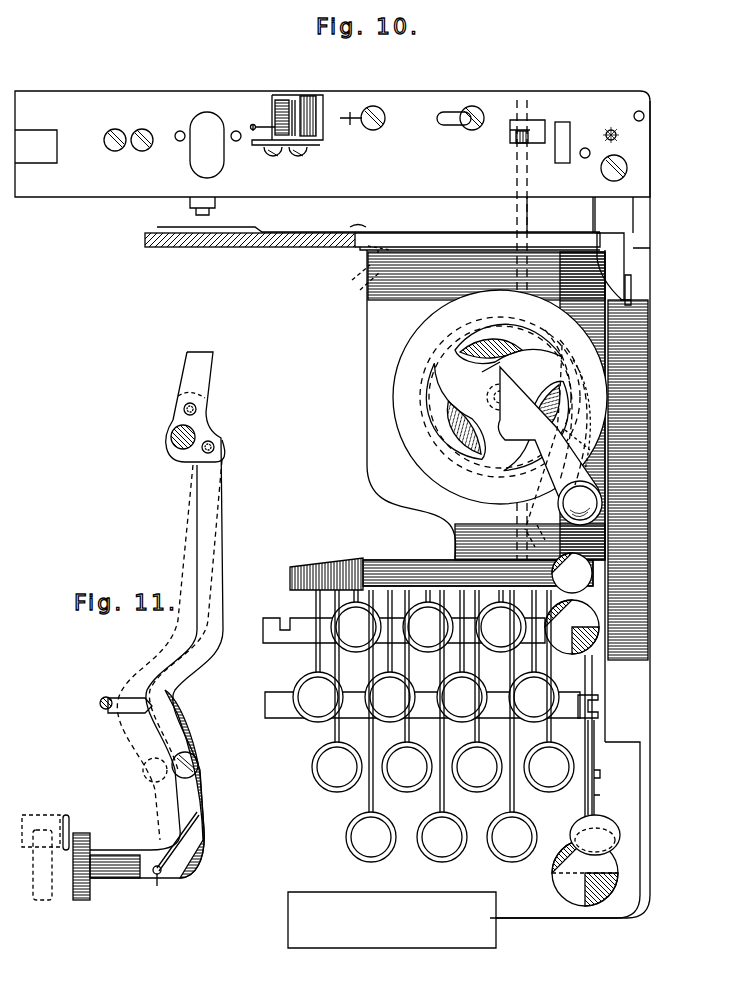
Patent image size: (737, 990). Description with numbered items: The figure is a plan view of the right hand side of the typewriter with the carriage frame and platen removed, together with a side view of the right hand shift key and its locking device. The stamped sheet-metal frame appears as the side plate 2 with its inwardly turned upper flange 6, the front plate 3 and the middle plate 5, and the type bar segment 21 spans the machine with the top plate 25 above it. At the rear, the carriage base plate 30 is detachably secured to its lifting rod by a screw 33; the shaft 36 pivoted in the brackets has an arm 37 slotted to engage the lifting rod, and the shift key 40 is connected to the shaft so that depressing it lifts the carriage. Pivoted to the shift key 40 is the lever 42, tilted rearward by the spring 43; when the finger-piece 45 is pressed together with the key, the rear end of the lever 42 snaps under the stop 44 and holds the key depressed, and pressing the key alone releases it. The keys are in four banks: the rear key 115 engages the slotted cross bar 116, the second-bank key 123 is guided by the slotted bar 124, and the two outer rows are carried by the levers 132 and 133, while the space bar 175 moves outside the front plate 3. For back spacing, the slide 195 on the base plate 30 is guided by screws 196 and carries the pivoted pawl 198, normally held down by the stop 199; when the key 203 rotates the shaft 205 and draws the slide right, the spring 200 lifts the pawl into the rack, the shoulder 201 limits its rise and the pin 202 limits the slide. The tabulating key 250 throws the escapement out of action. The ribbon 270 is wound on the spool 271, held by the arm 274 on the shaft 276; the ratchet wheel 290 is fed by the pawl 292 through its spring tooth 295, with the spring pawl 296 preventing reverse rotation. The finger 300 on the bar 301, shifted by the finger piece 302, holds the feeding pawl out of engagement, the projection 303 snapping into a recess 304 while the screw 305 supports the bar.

In FIG. 10, the side plate 2 is at (652, 230).
In FIG. 10, the front plate 3 is at (542, 918).
In FIG. 10, the middle plate 5 is at (290, 577).
In FIG. 10, the flange 6 is at (630, 348).
In FIG. 10, the type bar segment 21 is at (272, 250).
In FIG. 10, the top plate 25 is at (425, 492).
In FIG. 10, the base plate 30 is at (632, 133).
In FIG. 10, the screw 33 is at (628, 170).
In FIG. 11, the shaft 36 is at (172, 445).
In FIG. 11, the arm 37 is at (205, 375).
In FIG. 10, the shift key 40 is at (594, 668).
In FIG. 11, the shift key 40 is at (210, 528).
In FIG. 10, the lever 42 is at (596, 740).
In FIG. 11, the lever 42 is at (160, 722).
In FIG. 10, the spring 43 is at (596, 808).
In FIG. 11, the spring 43 is at (180, 838).
In FIG. 11, the stop 44 is at (100, 706).
In FIG. 10, the finger-piece 45 is at (620, 833).
In FIG. 11, the finger-piece 45 is at (63, 828).
In FIG. 10, the key 115 is at (330, 650).
In FIG. 10, the slotted cross bar 116 is at (278, 640).
In FIG. 10, the key 123 is at (308, 712).
In FIG. 10, the slotted bar 124 is at (600, 706).
In FIG. 10, the lever 132 is at (318, 785).
In FIG. 10, the lever 133 is at (347, 848).
In FIG. 10, the space bar 175 is at (380, 948).
In FIG. 10, the slide 195 is at (460, 108).
In FIG. 10, the screw 196 is at (395, 108).
In FIG. 10, the pawl 198 is at (305, 95).
In FIG. 10, the stop 199 is at (258, 150).
In FIG. 10, the spring 200 is at (262, 118).
In FIG. 10, the shoulder 201 is at (277, 98).
In FIG. 10, the pin 202 is at (372, 103).
In FIG. 10, the key 203 is at (595, 576).
In FIG. 10, the shaft 205 is at (528, 215).
In FIG. 10, the key 250 is at (598, 635).
In FIG. 10, the ribbon 270 is at (470, 345).
In FIG. 10, the spool 271 is at (405, 402).
In FIG. 10, the arm 274 is at (470, 420).
In FIG. 10, the shaft 276 is at (600, 512).
In FIG. 10, the ratchet wheel 290 is at (590, 405).
In FIG. 10, the pawl 292 is at (598, 217).
In FIG. 10, the spring tooth 295 is at (600, 380).
In FIG. 10, the spring pawl 296 is at (580, 425).
In FIG. 10, the finger 300 is at (575, 335).
In FIG. 10, the bar 301 is at (470, 222).
In FIG. 10, the finger piece 302 is at (634, 290).
In FIG. 10, the projection 303 is at (393, 233).
In FIG. 10, the recess 304 is at (349, 282).
In FIG. 10, the screw 305 is at (352, 225).